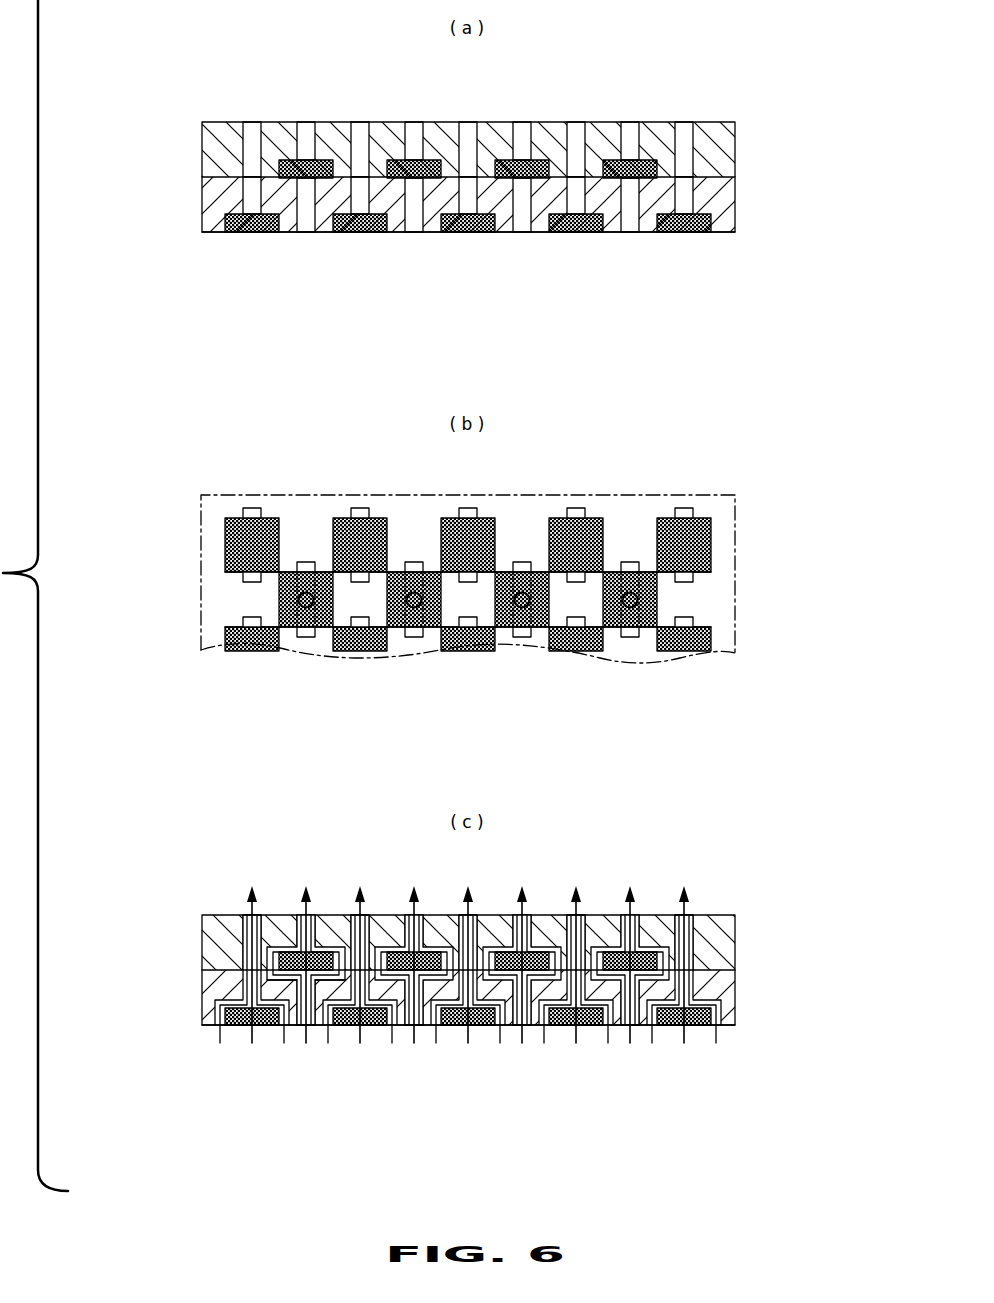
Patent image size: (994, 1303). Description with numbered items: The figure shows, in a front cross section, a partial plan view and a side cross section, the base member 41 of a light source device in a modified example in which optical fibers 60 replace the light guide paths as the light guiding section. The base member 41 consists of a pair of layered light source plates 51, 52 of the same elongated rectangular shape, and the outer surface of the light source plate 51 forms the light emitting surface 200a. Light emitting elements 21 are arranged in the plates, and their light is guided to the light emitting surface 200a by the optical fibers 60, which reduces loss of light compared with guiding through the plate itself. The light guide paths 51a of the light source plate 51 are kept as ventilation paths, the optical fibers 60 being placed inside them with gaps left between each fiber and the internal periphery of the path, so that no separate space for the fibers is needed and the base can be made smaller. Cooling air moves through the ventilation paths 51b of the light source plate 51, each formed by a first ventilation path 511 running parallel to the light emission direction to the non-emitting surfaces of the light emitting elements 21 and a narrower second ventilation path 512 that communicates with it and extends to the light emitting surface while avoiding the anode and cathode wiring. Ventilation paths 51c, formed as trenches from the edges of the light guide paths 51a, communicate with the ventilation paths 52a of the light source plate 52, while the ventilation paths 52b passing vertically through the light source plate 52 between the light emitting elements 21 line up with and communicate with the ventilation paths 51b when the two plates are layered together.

The light emitting element 21 is at (392, 157).
The base member 41 is at (807, 132).
The light source plate 51 is at (735, 206).
The light guide path 51a is at (303, 212).
The ventilation path 51b is at (248, 190).
The ventilation path 51c is at (335, 980).
The light source plate 52 is at (735, 150).
The ventilation path 52a is at (305, 135).
The ventilation path 52b is at (467, 140).
The optical fiber 60 is at (318, 200).
The light emitting surface 200a is at (722, 236).
The first ventilation path 511 is at (240, 990).
The second ventilation path 512 is at (222, 1010).